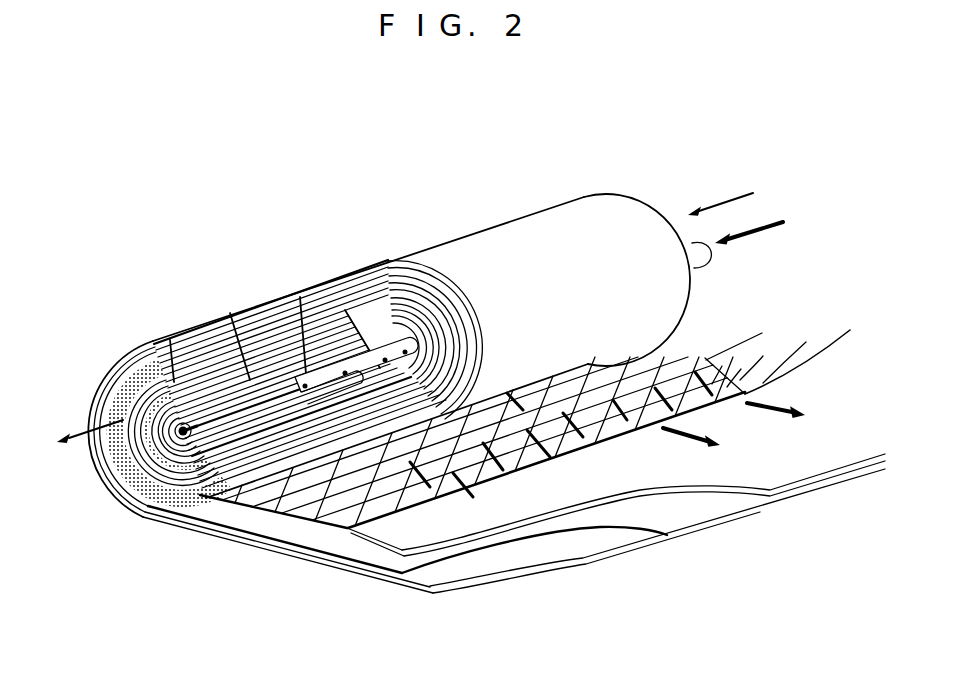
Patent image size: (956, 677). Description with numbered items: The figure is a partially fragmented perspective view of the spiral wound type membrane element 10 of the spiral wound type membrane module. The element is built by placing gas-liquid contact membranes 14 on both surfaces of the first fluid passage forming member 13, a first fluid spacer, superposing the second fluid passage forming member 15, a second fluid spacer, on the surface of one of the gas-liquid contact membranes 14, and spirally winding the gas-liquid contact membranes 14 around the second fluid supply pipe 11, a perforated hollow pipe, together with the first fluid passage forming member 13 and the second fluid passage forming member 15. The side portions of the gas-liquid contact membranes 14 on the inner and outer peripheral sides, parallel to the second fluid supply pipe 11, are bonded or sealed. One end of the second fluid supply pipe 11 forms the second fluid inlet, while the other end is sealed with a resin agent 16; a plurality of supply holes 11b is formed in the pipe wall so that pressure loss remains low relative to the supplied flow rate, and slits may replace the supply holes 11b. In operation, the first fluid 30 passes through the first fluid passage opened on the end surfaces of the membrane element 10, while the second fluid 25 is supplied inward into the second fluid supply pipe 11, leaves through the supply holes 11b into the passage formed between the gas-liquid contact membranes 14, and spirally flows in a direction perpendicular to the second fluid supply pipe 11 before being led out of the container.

The spiral wound type membrane element 10 is at (538, 134).
The second fluid supply pipe 11 is at (296, 299).
The supply holes 11b is at (232, 319).
The first fluid passage forming member 13 is at (583, 518).
The gas-liquid contact membranes 14 is at (551, 546).
The second fluid passage forming member 15 is at (677, 366).
The resin agent 16 is at (185, 487).
The second fluid 25 is at (754, 229).
The first fluid 30 is at (713, 202).